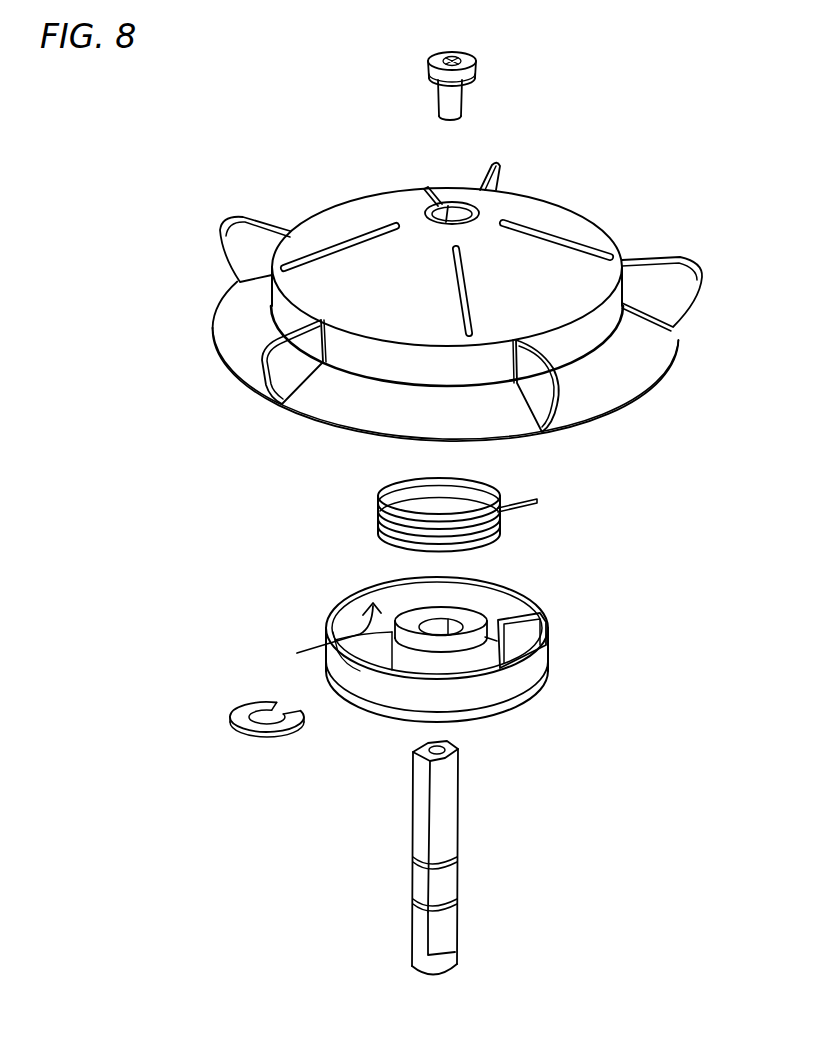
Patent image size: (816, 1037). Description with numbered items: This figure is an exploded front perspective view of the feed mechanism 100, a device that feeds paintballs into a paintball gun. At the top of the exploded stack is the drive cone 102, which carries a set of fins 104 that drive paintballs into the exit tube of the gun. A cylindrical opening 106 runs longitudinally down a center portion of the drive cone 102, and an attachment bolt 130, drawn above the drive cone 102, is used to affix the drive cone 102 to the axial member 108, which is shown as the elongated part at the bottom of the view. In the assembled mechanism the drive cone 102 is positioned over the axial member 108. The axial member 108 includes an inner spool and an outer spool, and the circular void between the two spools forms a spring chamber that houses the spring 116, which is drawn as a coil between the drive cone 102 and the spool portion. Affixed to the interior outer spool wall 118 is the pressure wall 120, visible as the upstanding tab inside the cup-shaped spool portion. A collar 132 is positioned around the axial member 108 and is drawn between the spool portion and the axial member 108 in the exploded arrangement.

The feed mechanism 100 is at (90, 204).
The drive cone 102 is at (202, 312).
The fins 104 is at (527, 395).
The cylindrical opening 106 is at (443, 210).
The axial member 108 is at (413, 832).
The spring 116 is at (363, 518).
The interior outer spool wall 118 is at (315, 635).
The pressure wall 120 is at (507, 608).
The attachment bolt 130 is at (413, 80).
The collar 132 is at (213, 717).